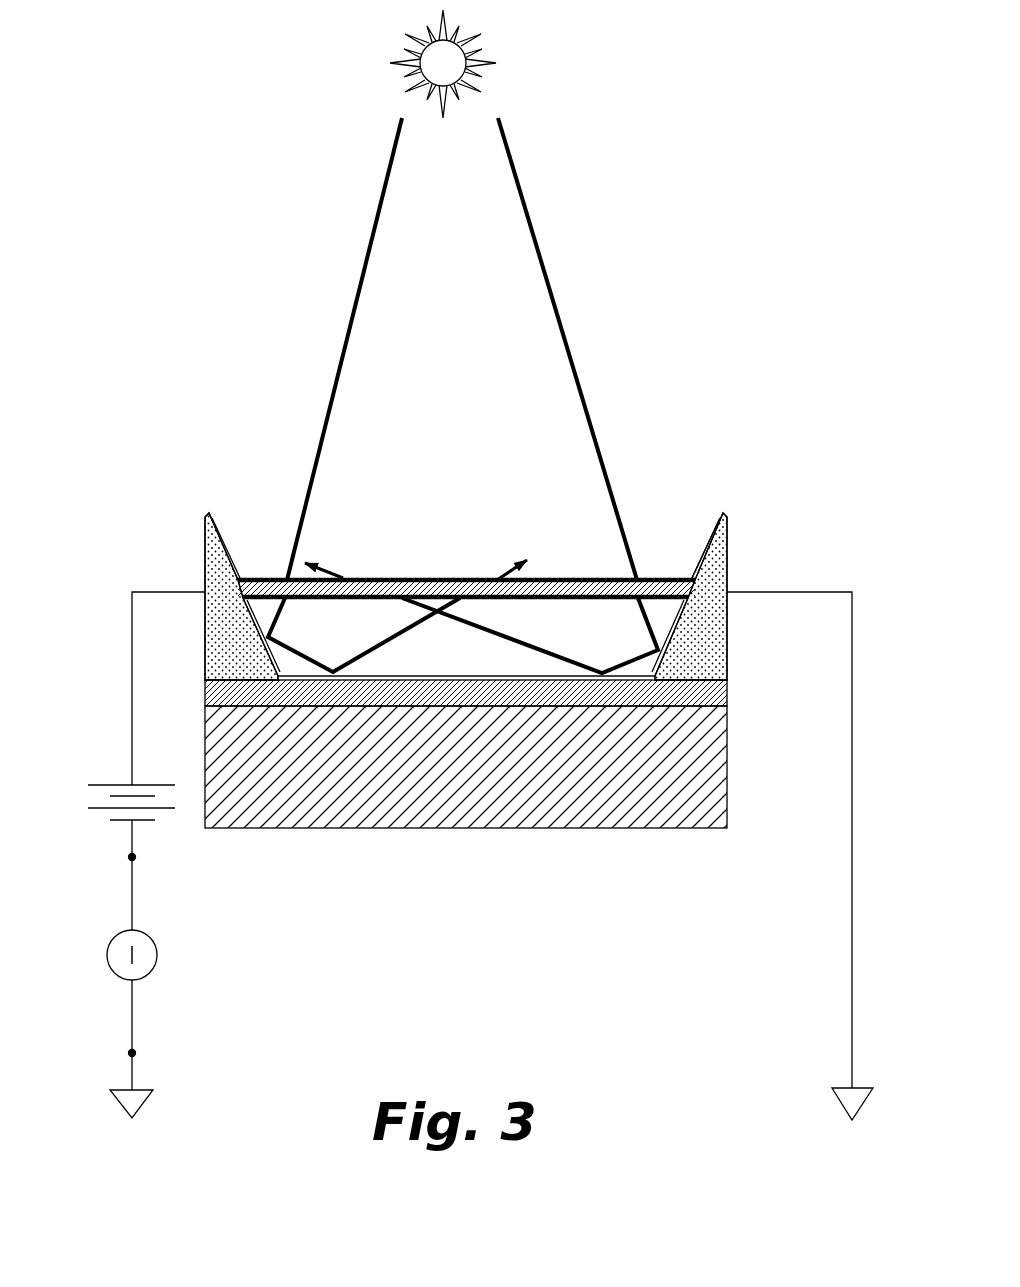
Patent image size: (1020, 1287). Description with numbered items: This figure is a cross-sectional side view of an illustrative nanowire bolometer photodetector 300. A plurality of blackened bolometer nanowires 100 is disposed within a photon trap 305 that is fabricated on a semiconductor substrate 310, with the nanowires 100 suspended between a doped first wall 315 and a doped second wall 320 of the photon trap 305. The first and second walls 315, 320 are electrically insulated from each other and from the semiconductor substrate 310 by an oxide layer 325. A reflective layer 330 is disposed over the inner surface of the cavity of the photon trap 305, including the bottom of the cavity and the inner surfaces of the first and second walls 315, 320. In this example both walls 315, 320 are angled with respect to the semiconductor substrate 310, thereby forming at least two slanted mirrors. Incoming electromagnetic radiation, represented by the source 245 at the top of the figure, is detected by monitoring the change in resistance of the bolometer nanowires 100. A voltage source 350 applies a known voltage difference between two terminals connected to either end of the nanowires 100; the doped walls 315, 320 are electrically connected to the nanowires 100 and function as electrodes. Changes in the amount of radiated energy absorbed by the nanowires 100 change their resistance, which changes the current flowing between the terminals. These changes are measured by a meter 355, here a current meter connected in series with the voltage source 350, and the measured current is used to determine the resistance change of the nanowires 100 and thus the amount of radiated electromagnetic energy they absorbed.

The light source (sun) 245 is at (427, 74).
The photodetector 300 is at (680, 336).
The photon trap 305 is at (378, 524).
The first wall 315 is at (206, 514).
The second wall 320 is at (727, 520).
The reflective layer 330 is at (702, 560).
The bolometer nanowires 100 is at (404, 578).
The oxide layer 325 is at (736, 681).
The semiconductor substrate 310 is at (736, 708).
The voltage source 350 is at (97, 756).
The meter 355 is at (157, 955).